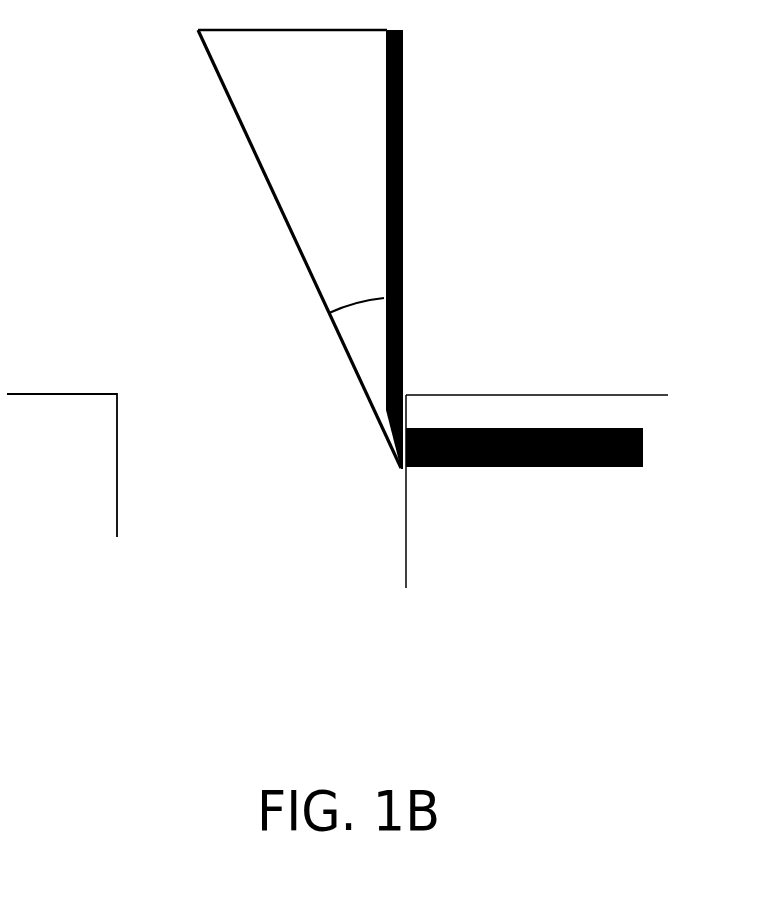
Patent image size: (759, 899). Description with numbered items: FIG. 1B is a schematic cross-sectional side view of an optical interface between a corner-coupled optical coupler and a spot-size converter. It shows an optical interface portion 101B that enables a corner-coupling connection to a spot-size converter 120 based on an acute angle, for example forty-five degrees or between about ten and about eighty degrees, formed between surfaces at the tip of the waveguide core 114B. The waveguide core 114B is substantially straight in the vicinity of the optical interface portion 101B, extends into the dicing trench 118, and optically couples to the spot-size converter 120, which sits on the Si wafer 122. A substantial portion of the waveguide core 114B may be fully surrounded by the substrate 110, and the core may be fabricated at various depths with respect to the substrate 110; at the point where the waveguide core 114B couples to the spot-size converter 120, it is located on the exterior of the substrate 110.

The substrate 110 is at (293, 122).
The waveguide core 114B is at (402, 193).
The optical interface portion 101B is at (445, 312).
The dicing trench 118 is at (283, 518).
The spot-size converter 120 is at (645, 443).
The Si wafer 122 is at (580, 398).